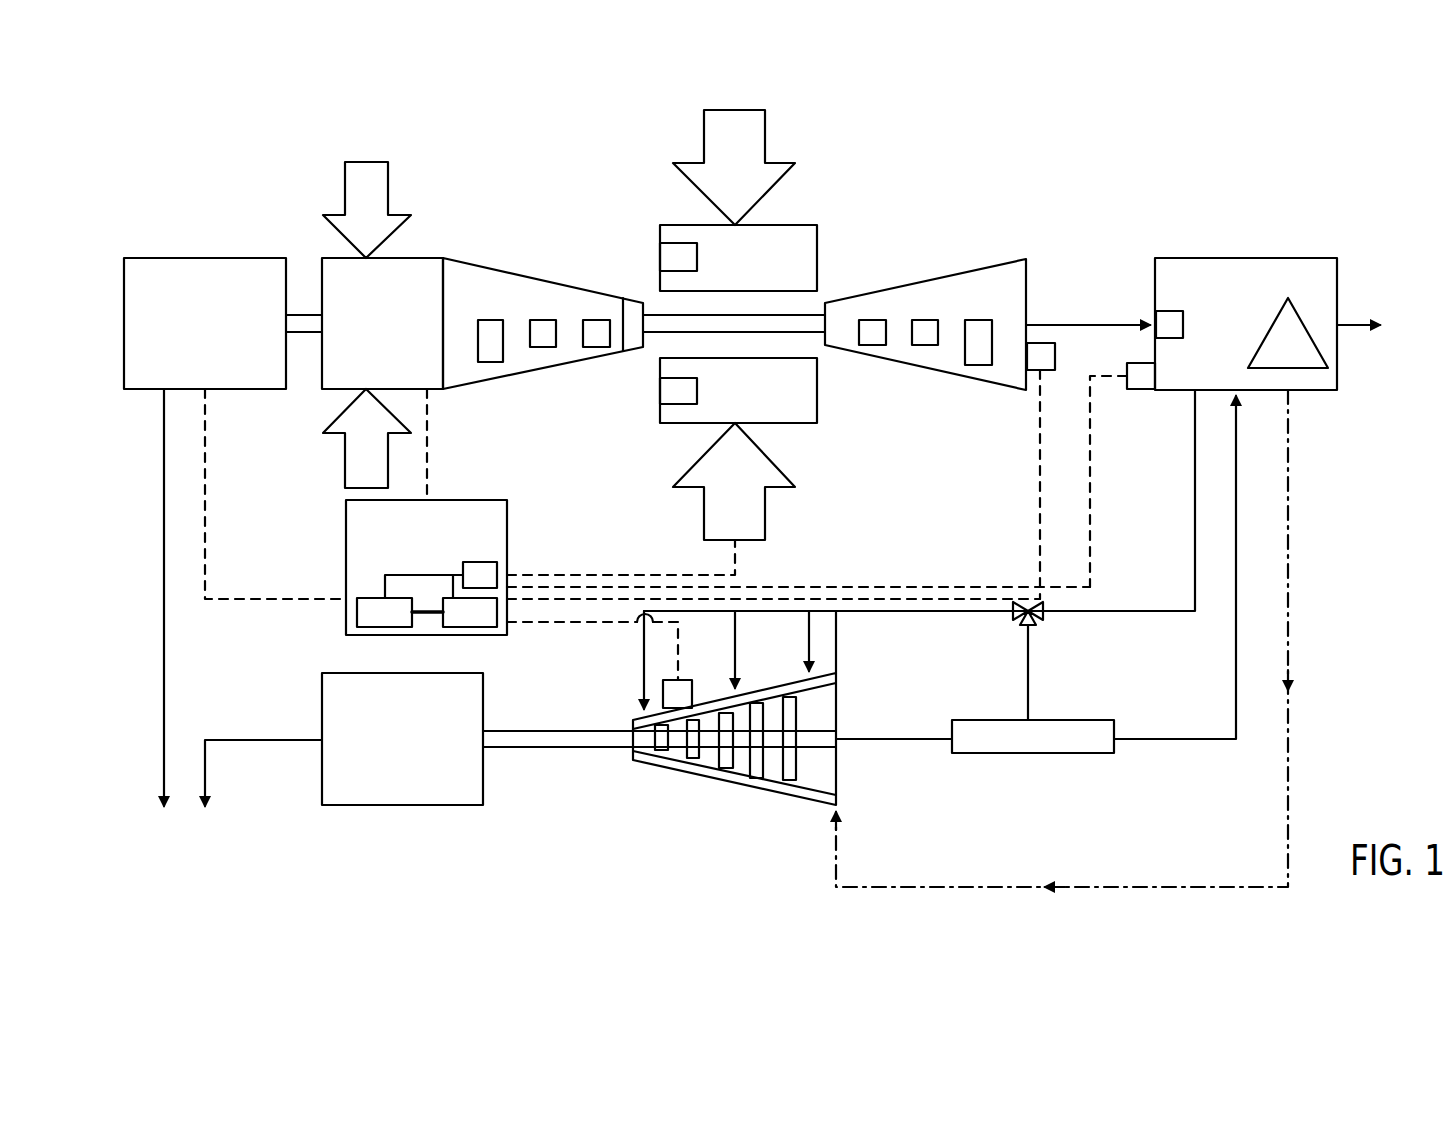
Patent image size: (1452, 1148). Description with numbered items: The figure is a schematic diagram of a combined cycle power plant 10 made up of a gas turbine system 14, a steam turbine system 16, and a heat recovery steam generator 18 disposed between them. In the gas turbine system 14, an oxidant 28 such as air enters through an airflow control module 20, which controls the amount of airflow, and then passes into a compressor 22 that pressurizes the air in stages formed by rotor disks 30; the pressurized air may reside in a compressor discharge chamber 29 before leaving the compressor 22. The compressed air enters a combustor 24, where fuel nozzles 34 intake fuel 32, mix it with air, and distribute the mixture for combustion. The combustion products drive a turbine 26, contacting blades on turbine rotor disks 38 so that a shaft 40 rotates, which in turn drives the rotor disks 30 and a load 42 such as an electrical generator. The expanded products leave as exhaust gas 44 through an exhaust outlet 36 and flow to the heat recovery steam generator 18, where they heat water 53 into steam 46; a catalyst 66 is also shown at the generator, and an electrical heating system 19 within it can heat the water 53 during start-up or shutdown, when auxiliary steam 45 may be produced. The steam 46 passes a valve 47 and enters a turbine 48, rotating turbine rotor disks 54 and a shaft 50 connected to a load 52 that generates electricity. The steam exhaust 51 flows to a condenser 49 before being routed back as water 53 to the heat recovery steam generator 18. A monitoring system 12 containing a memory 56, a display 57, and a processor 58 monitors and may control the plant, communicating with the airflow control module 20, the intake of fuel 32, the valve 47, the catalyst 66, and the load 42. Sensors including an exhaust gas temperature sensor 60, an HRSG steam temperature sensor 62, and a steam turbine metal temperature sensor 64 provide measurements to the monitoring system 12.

The combined cycle power plant 10 is at (1086, 136).
The monitoring system 12 is at (497, 500).
The gas turbine system 14 is at (452, 180).
The steam turbine system 16 is at (912, 808).
The heat recovery steam generator 18 is at (1235, 258).
The electrical heating system 19 is at (1305, 335).
The airflow control module 20 is at (345, 258).
The compressor 22 is at (460, 390).
The combustor 24 is at (817, 262).
The turbine 26 is at (925, 280).
The oxidant 28 is at (345, 186).
The compressor discharge chamber 29 is at (637, 350).
The rotor disks 30 is at (493, 362).
The fuel 32 is at (704, 136).
The fuel nozzles 34 is at (697, 256).
The exhaust outlet 36 is at (1028, 280).
The turbine rotor disks 38 is at (977, 365).
The shaft 40 is at (304, 334).
The load 42 is at (200, 258).
The exhaust gas 44 is at (1085, 323).
The auxiliary steam 45 is at (1292, 540).
The steam 46 is at (925, 613).
The valve 47 is at (1043, 615).
The turbine 48 is at (773, 688).
The condenser 49 is at (1065, 753).
The shaft 50 is at (590, 748).
The steam exhaust 51 is at (903, 738).
The load 52 is at (405, 805).
The water 53 is at (1236, 660).
The turbine rotor disks 54 is at (662, 750).
The memory 56 is at (385, 627).
The display 57 is at (480, 562).
The processor 58 is at (470, 627).
The exhaust gas temperature sensor 60 is at (1056, 352).
The HRSG steam temperature sensor 62 is at (1140, 390).
The steam turbine metal temperature sensor 64 is at (692, 697).
The catalyst 66 is at (1184, 321).